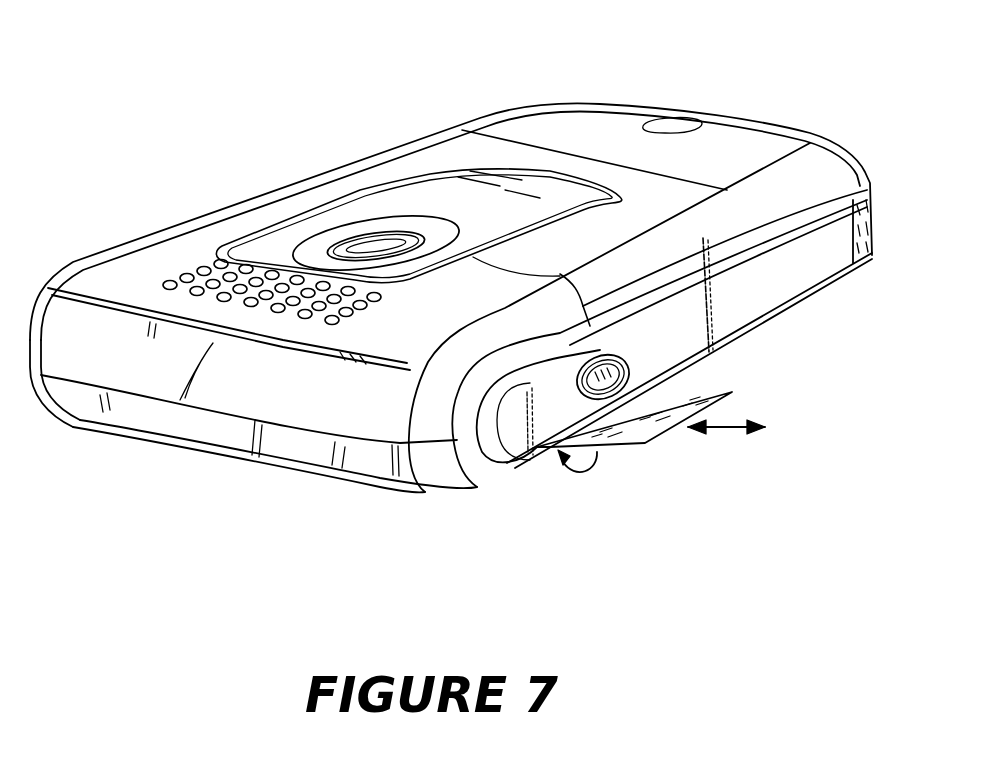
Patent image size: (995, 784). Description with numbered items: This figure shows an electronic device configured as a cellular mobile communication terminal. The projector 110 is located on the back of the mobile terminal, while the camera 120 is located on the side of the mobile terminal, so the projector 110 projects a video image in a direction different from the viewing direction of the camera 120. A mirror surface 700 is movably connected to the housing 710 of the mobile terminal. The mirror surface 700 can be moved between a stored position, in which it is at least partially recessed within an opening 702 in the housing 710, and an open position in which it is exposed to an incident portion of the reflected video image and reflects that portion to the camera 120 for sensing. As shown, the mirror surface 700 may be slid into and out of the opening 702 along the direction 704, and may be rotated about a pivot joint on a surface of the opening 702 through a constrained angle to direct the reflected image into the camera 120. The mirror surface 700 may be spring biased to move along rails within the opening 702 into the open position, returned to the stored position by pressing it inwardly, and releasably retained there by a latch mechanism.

The projector 110 is at (379, 242).
The camera 120 is at (633, 362).
The mirror surface 700 is at (625, 432).
The opening 702 is at (553, 452).
The direction 704 is at (722, 427).
The housing 710 is at (837, 257).